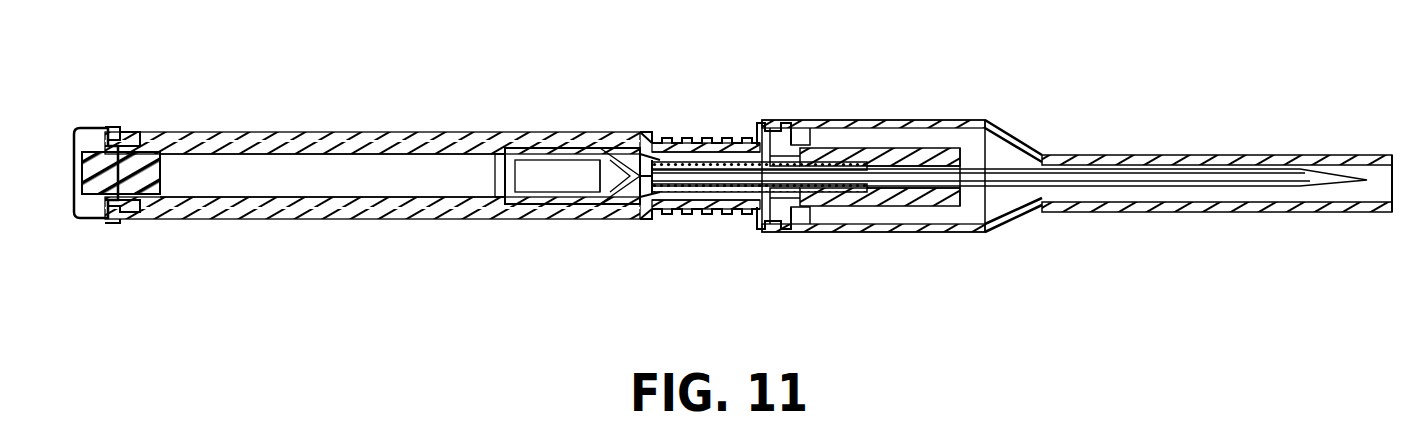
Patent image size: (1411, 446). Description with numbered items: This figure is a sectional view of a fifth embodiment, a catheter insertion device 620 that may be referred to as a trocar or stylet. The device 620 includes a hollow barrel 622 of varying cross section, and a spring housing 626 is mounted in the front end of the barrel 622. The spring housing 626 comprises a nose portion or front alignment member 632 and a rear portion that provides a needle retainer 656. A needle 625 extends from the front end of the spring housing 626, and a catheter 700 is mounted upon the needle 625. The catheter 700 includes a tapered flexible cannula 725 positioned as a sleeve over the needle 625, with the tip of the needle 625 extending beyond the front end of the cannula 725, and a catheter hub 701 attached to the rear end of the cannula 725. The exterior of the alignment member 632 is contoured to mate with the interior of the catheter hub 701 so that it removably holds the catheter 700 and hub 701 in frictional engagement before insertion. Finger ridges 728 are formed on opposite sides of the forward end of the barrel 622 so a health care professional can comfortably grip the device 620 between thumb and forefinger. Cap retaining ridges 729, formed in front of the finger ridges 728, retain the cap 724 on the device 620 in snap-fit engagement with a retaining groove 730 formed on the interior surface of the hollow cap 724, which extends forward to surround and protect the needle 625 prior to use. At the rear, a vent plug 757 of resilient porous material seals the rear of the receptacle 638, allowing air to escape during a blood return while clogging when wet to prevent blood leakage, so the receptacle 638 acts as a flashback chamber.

The device 620 is at (656, 94).
The hollow barrel 622 is at (432, 131).
The needle 625 is at (1325, 176).
The spring housing 626 is at (740, 212).
The front alignment member 632 is at (860, 204).
The receptacle 638 is at (440, 184).
The needle retainer 656 is at (690, 214).
The catheter 700 is at (990, 120).
The catheter hub 701 is at (892, 148).
The cap 724 is at (880, 118).
The tapered flexible cannula 725 is at (1020, 211).
The finger ridges 728 is at (702, 128).
The cap retaining ridges 729 is at (786, 118).
The retaining groove 730 is at (800, 128).
The vent plug 757 is at (78, 214).